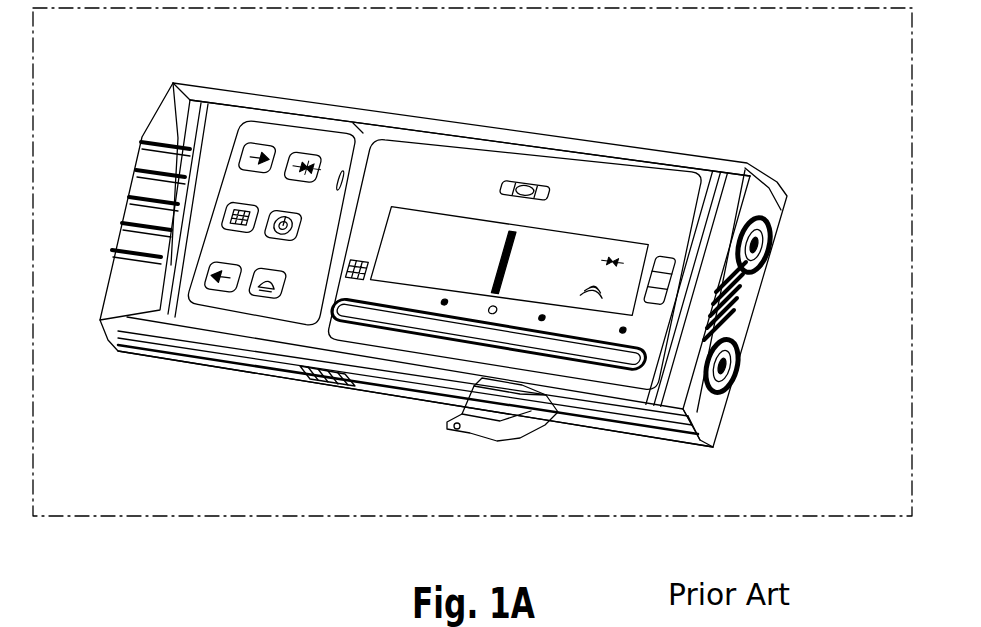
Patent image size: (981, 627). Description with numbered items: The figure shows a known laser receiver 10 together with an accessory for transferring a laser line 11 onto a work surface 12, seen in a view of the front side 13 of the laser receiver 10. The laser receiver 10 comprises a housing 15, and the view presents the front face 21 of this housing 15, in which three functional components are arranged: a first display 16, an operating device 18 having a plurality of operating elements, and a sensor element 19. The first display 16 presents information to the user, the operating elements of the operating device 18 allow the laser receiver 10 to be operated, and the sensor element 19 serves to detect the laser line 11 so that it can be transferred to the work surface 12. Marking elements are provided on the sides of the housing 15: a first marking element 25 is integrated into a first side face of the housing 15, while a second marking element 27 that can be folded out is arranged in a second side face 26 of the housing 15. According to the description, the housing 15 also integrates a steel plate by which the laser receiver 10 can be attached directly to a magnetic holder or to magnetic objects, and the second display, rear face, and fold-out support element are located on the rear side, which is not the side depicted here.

The laser receiver 10 is at (737, 131).
The laser line 11 is at (503, 262).
The work surface 12 is at (812, 460).
The front side 13 is at (179, 287).
The housing 15 is at (227, 112).
The first display 16 is at (512, 262).
The operating device 18 is at (277, 222).
The sensor element 19 is at (488, 334).
The front face 21 is at (370, 135).
The first marking element 25 is at (515, 259).
The second side face 26 is at (300, 368).
The second marking element 27 is at (500, 428).